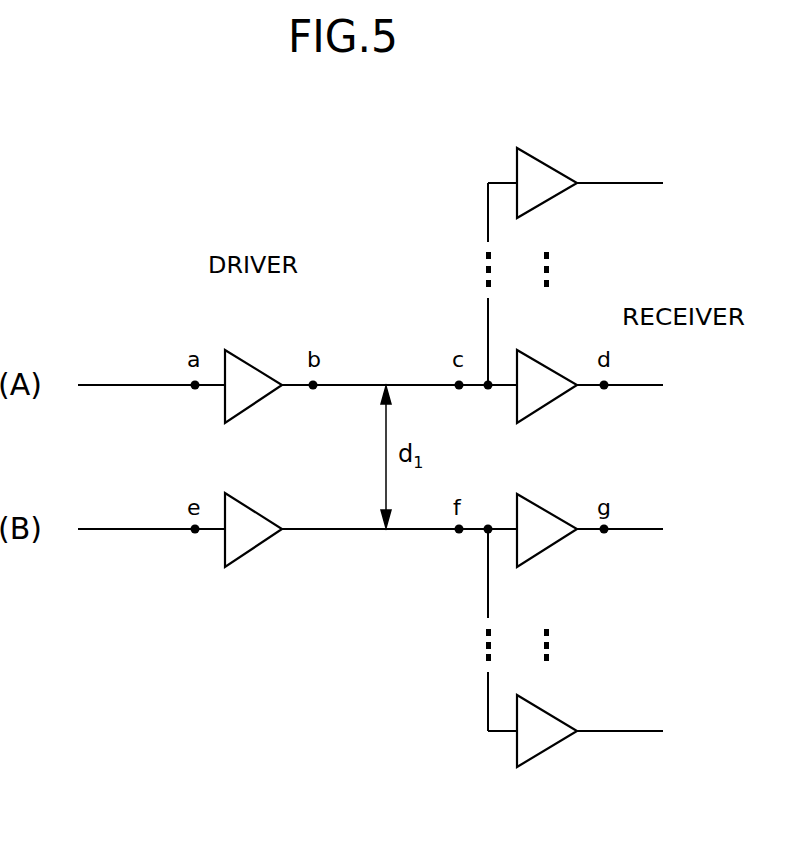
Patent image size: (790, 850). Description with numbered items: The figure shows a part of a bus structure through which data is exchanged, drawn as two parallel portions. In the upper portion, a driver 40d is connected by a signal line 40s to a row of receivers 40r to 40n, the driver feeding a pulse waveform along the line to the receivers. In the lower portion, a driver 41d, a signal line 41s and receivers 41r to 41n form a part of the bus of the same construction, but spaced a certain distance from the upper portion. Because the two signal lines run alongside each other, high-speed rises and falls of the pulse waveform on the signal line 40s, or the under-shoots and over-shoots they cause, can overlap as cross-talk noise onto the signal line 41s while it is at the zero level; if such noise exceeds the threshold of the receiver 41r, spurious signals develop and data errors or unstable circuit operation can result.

The driver 40d is at (248, 360).
The signal line 40s is at (368, 384).
The receiver 40r is at (545, 365).
The receiver 40n is at (545, 162).
The driver 41d is at (256, 548).
The signal line 41s is at (358, 531).
The receiver 41r is at (545, 509).
The receiver 41n is at (545, 752).